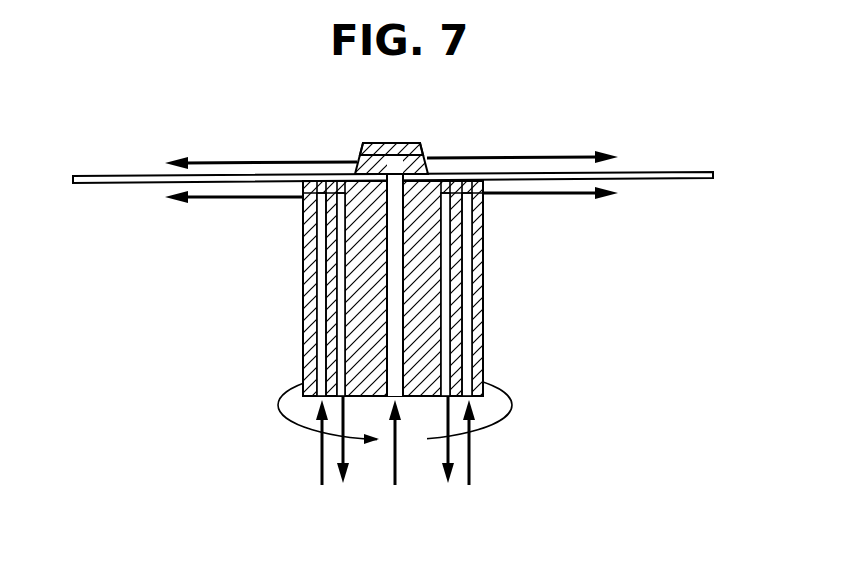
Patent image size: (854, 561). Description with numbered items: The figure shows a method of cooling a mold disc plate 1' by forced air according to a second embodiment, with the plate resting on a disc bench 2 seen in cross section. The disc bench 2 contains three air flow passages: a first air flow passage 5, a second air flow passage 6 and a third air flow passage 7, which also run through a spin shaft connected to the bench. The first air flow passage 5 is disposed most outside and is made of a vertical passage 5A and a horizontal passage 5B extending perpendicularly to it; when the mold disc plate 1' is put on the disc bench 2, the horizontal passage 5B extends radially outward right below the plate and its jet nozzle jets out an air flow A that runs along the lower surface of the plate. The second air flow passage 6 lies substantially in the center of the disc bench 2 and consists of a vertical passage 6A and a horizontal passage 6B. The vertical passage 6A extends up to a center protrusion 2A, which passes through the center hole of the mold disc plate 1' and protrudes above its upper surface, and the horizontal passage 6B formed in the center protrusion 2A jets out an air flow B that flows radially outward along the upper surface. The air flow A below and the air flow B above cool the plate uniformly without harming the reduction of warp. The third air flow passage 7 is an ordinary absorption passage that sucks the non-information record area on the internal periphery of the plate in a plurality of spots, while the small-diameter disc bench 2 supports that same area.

The mold disc plate 1' is at (393, 141).
The disc bench 2 is at (512, 234).
The center protrusion 2A is at (398, 145).
The first air flow passage 5 is at (465, 302).
The vertical passage 5A is at (465, 264).
The horizontal passage 5B is at (475, 181).
The second air flow passage 6 is at (393, 310).
The vertical passage 6A is at (393, 234).
The horizontal passage 6B is at (372, 147).
The third air flow passage 7 is at (447, 343).
The air flow A is at (619, 200).
The air flow B is at (578, 153).